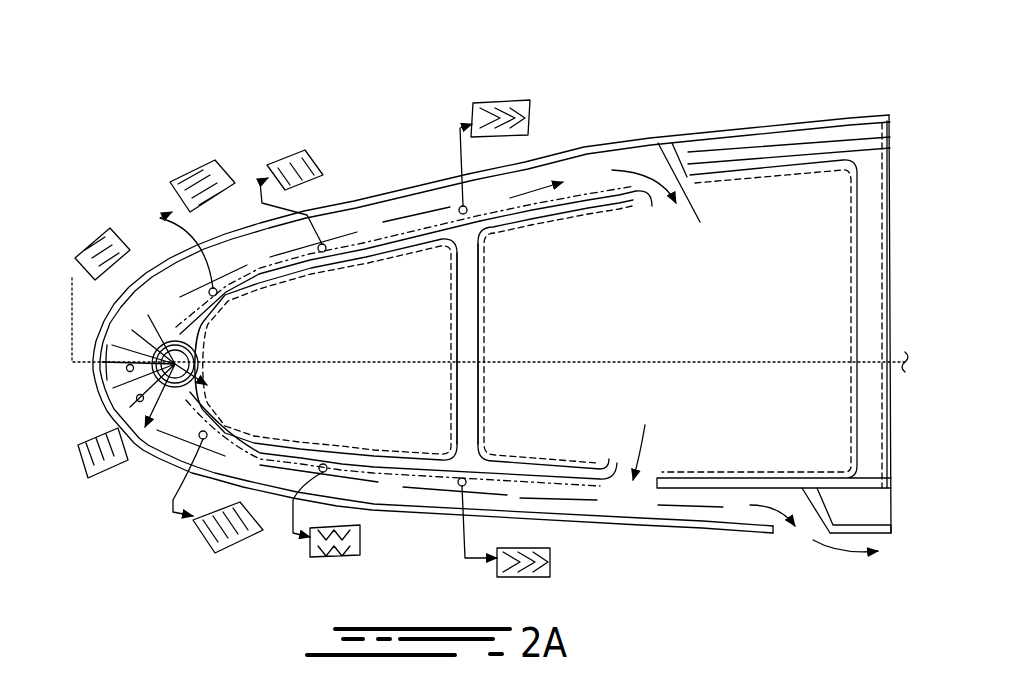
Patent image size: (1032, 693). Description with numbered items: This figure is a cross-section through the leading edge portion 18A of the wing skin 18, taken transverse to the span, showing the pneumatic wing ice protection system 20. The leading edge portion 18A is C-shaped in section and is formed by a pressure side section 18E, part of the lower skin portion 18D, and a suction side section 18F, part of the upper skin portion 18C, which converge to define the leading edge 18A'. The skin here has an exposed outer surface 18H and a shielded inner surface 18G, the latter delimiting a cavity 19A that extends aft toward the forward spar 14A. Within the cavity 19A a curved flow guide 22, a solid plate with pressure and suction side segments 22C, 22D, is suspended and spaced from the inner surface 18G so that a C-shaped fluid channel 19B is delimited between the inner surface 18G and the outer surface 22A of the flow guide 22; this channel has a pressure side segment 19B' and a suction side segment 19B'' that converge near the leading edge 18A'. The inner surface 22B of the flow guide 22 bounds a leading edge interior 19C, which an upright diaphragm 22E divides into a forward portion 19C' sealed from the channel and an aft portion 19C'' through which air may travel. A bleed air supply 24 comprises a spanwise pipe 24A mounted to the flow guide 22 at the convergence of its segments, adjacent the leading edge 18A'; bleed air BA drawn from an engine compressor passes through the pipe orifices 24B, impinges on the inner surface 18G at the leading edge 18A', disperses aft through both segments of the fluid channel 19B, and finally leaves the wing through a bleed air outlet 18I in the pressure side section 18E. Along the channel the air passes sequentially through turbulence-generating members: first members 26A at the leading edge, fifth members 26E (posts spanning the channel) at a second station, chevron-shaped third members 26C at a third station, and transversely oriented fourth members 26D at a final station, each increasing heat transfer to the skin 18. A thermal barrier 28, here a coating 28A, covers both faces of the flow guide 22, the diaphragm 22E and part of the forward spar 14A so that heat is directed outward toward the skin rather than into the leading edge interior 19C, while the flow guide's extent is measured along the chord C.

The forward spar 14A is at (874, 278).
The skin 18 is at (746, 123).
The leading edge portion 18A is at (645, 73).
The leading edge 18A' is at (53, 334).
The upper skin portion 18C is at (823, 116).
The lower skin portion 18D is at (883, 534).
The pressure side section 18E is at (407, 513).
The suction side section 18F is at (408, 222).
The inner surface 18G is at (668, 198).
The outer surface 18H is at (643, 530).
The bleed air outlet 18I is at (785, 533).
The cavity 19A is at (571, 223).
The fluid channel 19B is at (246, 171).
The pressure side segment 19B' is at (476, 507).
The suction side segment 19B'' is at (371, 180).
The leading edge interior 19C is at (555, 334).
The forward portion 19C' is at (326, 349).
The aft portion 19C'' is at (774, 324).
The wing ice protection system 20 is at (135, 333).
The flow guide 22 is at (594, 178).
The outer surface 22A is at (470, 208).
The inner surface 22B is at (530, 216).
The pressure side segment 22C is at (368, 454).
The suction side segment 22D is at (393, 243).
The diaphragm 22E is at (472, 305).
The bleed air supply 24 is at (200, 378).
The pipe 24A is at (200, 366).
The pipe orifices 24B is at (165, 350).
The first members 26A is at (82, 430).
The third members 26C is at (310, 355).
The fourth members 26D is at (504, 342).
The fifth members 26E is at (211, 360).
The thermal barrier 28 is at (572, 215).
The coating 28A is at (530, 200).
The bleed air BA is at (395, 218).
The chord C is at (762, 360).